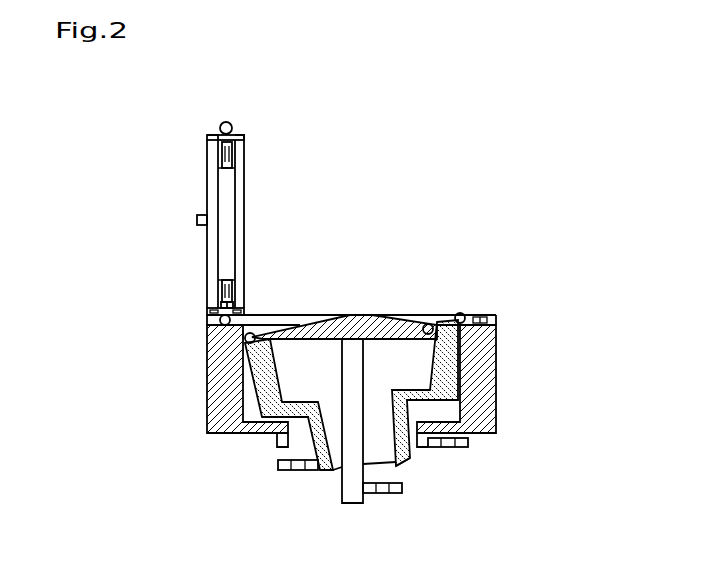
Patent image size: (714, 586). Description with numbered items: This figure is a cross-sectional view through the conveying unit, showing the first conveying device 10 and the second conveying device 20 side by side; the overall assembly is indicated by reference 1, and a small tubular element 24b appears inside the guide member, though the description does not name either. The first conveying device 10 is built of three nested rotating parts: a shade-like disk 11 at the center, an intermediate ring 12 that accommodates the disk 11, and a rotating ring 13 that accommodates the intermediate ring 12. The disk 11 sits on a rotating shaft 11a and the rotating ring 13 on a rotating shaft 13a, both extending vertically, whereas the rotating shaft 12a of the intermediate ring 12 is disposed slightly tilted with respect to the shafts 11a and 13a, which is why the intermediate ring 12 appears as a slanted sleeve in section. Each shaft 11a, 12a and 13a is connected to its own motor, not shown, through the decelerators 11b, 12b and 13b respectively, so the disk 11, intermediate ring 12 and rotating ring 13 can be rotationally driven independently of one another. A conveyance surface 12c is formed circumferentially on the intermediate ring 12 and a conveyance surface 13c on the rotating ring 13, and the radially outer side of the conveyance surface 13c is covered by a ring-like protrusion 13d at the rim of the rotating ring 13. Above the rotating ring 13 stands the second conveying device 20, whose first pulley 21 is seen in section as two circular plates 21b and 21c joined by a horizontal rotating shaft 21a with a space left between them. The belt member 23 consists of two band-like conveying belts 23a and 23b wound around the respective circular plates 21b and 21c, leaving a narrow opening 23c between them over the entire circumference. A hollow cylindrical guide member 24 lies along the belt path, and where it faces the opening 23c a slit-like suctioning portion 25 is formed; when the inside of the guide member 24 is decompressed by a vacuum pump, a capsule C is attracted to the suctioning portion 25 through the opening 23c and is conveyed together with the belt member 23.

The rotating device 1 is at (436, 231).
The first conveying device 10 is at (514, 352).
The shade-like disk 11 is at (356, 316).
The rotating shaft 11a is at (347, 485).
The decelerator 11b is at (400, 495).
The intermediate ring 12 is at (258, 392).
The rotating shaft 12a is at (412, 460).
The decelerator 12b is at (275, 470).
The conveyance surface 12c is at (243, 343).
The rotating ring 13 is at (482, 388).
The rotating shaft 13a is at (275, 440).
The decelerator 13b is at (466, 450).
The conveyance surface 13c is at (478, 316).
The ring-like protrusion 13d is at (500, 320).
The second conveying device 20 is at (266, 208).
The first pulley 21 is at (207, 176).
The rotating shaft 21a is at (196, 222).
The circular plate 21b is at (214, 203).
The circular plate 21c is at (240, 247).
The belt member 23 is at (206, 310).
The conveying belt 23a is at (209, 137).
The conveying belt 23b is at (246, 136).
The opening 23c is at (224, 122).
The guide member 24 is at (237, 160).
The lower rod 24b is at (223, 275).
The suctioning portion 25 is at (221, 299).
The capsule C is at (244, 337).